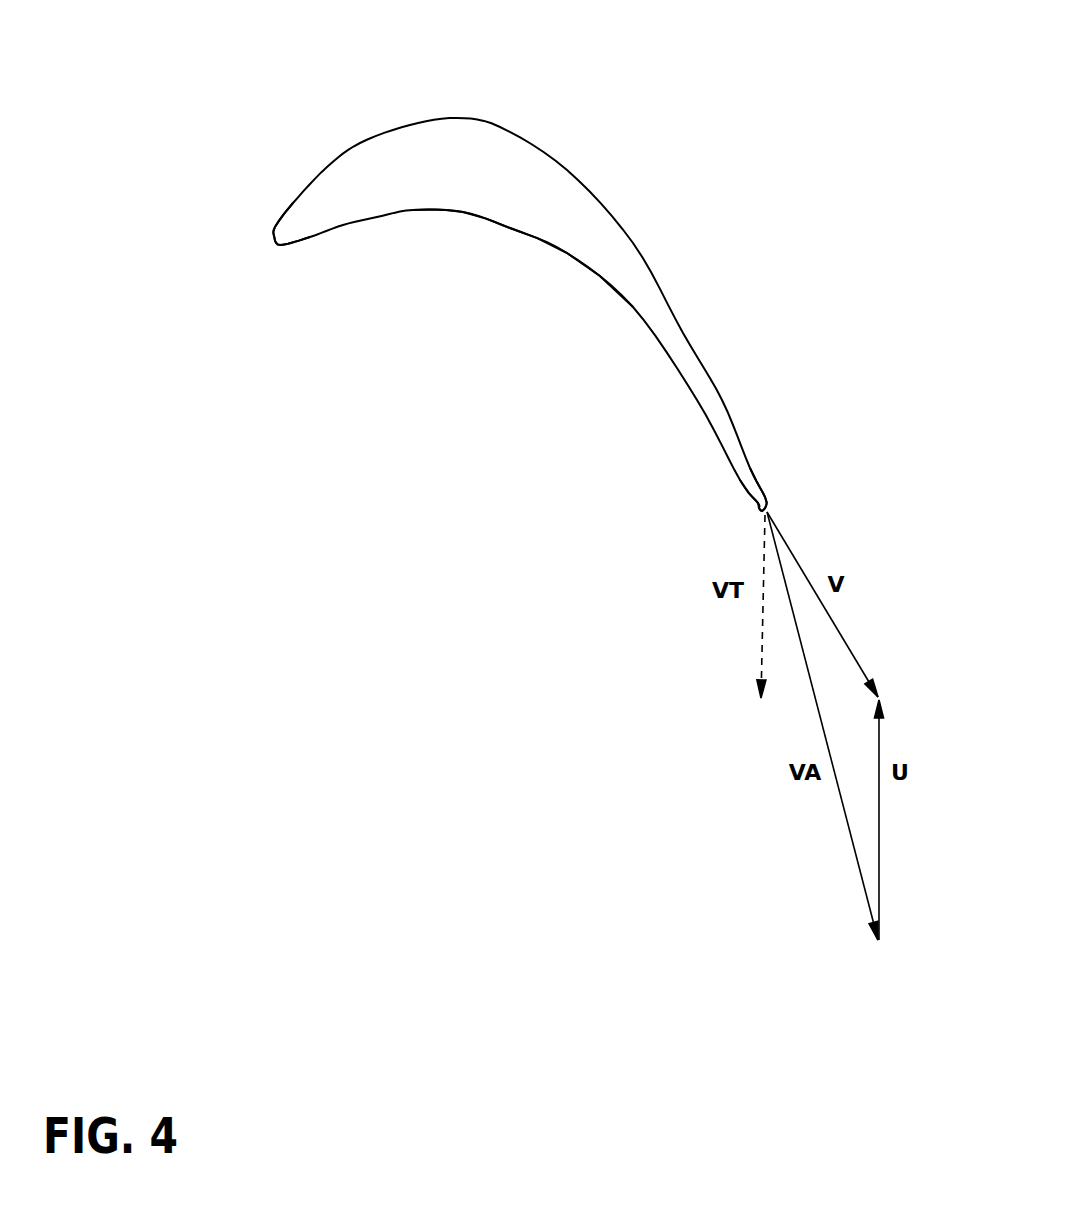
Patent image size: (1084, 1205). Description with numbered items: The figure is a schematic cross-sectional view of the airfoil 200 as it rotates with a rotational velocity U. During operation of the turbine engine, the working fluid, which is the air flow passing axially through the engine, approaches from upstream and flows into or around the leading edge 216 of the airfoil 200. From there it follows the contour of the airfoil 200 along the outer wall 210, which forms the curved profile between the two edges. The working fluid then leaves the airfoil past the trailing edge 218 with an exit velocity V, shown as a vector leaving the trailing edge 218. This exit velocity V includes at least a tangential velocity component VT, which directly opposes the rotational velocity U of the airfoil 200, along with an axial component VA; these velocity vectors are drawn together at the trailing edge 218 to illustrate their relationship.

The airfoil 200 is at (327, 153).
The leading edge 216 is at (277, 245).
The outer wall 210 is at (513, 228).
The trailing edge 218 is at (763, 510).